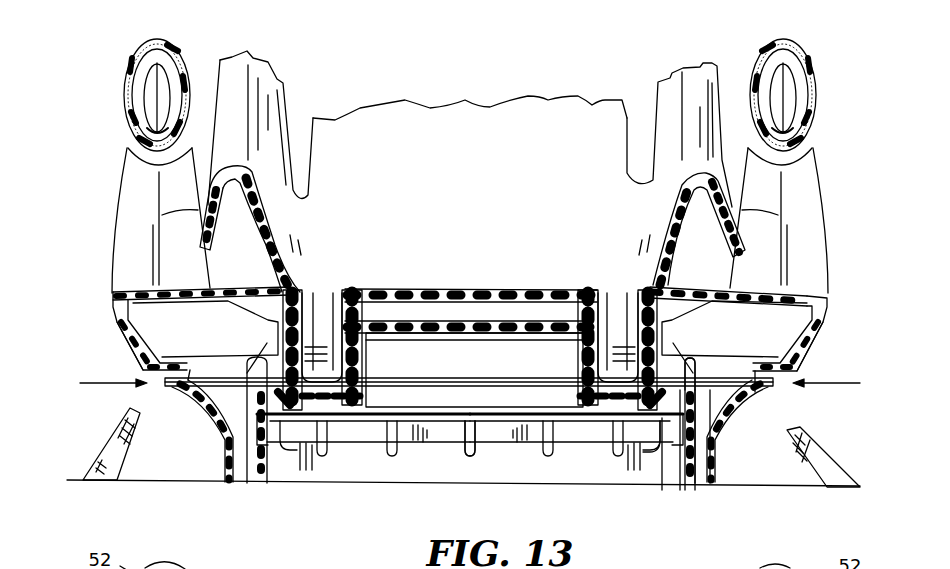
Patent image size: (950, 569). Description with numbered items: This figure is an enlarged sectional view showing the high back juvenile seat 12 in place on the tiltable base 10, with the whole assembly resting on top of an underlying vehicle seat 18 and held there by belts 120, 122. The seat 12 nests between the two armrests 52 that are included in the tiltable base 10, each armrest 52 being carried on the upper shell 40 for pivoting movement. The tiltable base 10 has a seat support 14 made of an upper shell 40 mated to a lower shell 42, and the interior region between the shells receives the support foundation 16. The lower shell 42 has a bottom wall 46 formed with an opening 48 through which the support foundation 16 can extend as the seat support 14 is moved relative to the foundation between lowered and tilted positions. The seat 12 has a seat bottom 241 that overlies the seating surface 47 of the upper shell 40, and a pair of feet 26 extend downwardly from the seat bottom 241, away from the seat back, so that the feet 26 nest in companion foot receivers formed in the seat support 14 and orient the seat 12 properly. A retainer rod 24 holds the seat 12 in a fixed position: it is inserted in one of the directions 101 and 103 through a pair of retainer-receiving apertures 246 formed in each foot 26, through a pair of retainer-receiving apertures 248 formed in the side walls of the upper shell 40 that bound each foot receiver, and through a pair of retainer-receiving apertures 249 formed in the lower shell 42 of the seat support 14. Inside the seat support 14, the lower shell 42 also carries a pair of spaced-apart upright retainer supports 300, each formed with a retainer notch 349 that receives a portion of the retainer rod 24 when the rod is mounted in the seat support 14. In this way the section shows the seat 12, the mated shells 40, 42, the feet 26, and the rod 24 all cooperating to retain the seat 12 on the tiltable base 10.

The tiltable base 10 is at (104, 194).
The high back juvenile seat 12 is at (606, 86).
The seat support 14 is at (826, 338).
The support foundation 16 is at (437, 462).
The vehicle seat 18 is at (748, 481).
The retainer rod 24 is at (485, 381).
The foot 26 is at (362, 298).
The upper shell 40 is at (113, 296).
The lower shell 42 is at (118, 336).
The bottom wall 46 is at (242, 482).
The seating surface 47 is at (455, 324).
The opening 48 is at (666, 486).
The armrest 52 is at (133, 44).
The direction 101 is at (828, 385).
The direction 103 is at (99, 387).
The belt 120 is at (95, 463).
The belt 122 is at (825, 462).
The seat bottom 241 is at (417, 289).
The retainer-receiving aperture 246 is at (313, 375).
The retainer-receiving aperture 248 is at (277, 377).
The retainer-receiving aperture 249 is at (190, 390).
The upright retainer support 300 is at (235, 405).
The retainer notch 349 is at (698, 364).